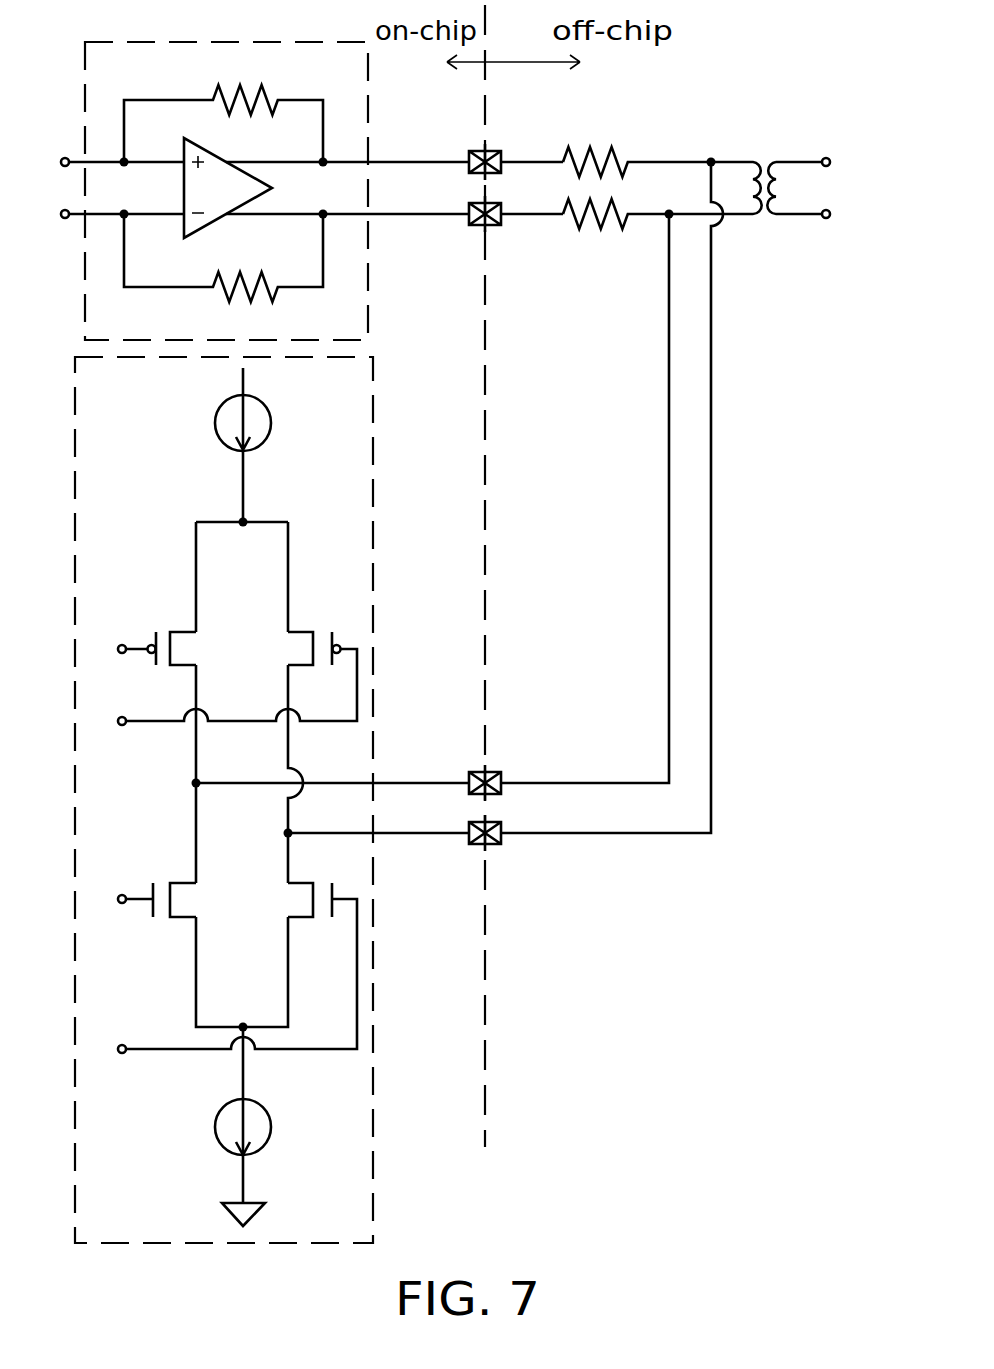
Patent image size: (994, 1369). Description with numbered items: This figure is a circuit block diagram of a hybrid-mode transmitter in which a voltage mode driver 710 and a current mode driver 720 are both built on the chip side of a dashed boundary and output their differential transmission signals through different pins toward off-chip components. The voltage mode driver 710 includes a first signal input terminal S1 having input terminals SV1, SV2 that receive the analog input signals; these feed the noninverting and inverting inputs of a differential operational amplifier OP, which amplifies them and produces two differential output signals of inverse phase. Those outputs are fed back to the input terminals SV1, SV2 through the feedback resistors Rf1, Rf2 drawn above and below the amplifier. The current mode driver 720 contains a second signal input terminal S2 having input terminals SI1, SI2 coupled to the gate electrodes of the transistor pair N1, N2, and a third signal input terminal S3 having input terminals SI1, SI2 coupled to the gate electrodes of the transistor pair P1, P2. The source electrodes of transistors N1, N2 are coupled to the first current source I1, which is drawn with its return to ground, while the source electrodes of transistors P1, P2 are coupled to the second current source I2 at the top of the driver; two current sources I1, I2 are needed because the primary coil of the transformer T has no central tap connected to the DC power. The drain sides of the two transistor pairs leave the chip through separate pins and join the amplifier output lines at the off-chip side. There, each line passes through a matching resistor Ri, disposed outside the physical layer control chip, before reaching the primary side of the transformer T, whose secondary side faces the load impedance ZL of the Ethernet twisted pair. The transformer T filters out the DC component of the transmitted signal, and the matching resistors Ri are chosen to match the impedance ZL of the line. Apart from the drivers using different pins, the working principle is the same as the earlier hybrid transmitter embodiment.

The voltage mode driver 710 is at (243, 42).
The current mode driver 720 is at (374, 420).
The differential operational amplifier OP is at (184, 183).
The feedback resistor Rf1 is at (223, 104).
The feedback resistor Rf2 is at (223, 258).
The matching resistor Ri is at (658, 186).
The transformer T is at (772, 222).
The impedance of the twisted pair ZL is at (818, 194).
The first signal input terminal S1 is at (107, 187).
The second signal input terminal S2 is at (230, 974).
The third signal input terminal S3 is at (218, 684).
The input terminal SV1 is at (65, 157).
The input terminal SV2 is at (65, 219).
The input terminal SI1 is at (122, 893).
The input terminal SI2 is at (118, 1097).
The first current source I1 is at (264, 1127).
The second current source I2 is at (263, 445).
The transistor P1 is at (317, 668).
The transistor P2 is at (172, 668).
The transistor N1 is at (317, 918).
The transistor N2 is at (173, 918).